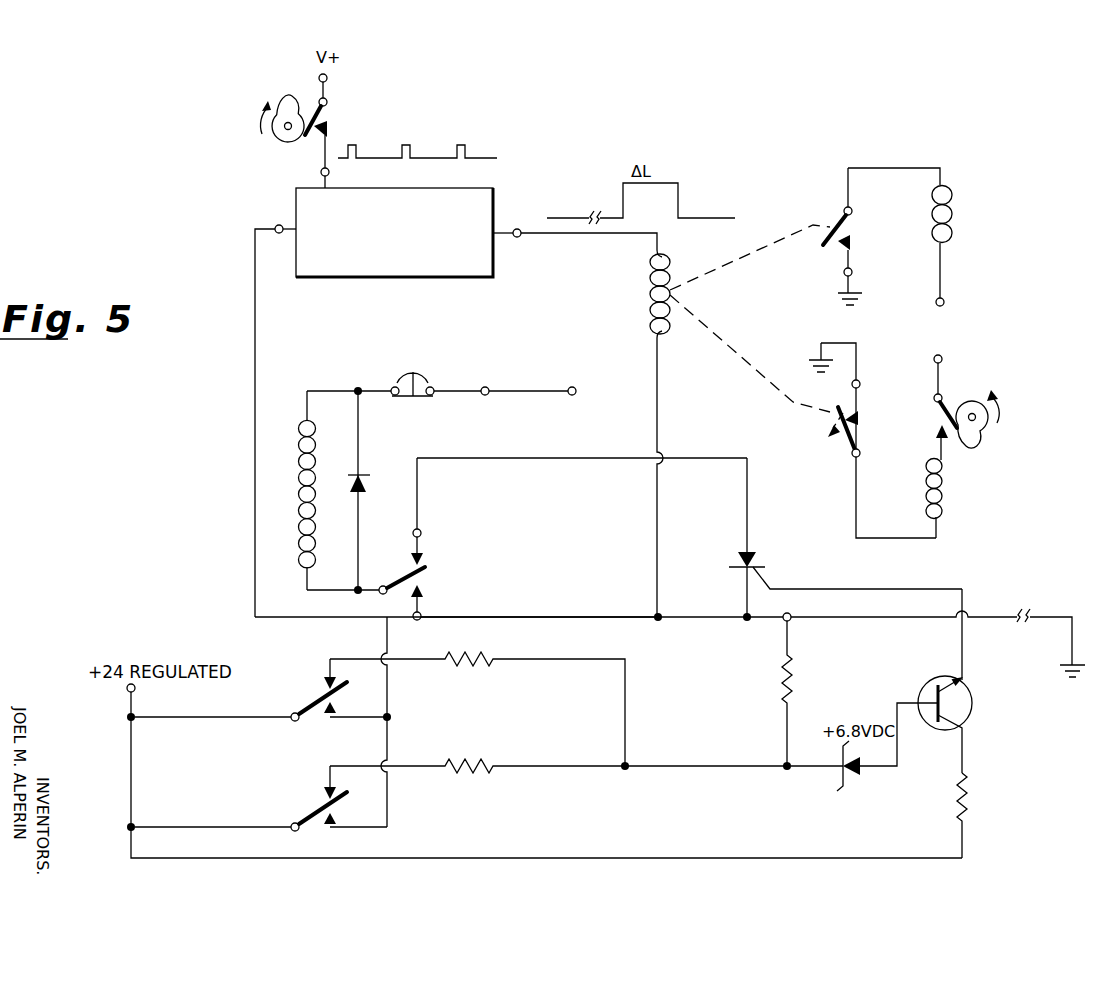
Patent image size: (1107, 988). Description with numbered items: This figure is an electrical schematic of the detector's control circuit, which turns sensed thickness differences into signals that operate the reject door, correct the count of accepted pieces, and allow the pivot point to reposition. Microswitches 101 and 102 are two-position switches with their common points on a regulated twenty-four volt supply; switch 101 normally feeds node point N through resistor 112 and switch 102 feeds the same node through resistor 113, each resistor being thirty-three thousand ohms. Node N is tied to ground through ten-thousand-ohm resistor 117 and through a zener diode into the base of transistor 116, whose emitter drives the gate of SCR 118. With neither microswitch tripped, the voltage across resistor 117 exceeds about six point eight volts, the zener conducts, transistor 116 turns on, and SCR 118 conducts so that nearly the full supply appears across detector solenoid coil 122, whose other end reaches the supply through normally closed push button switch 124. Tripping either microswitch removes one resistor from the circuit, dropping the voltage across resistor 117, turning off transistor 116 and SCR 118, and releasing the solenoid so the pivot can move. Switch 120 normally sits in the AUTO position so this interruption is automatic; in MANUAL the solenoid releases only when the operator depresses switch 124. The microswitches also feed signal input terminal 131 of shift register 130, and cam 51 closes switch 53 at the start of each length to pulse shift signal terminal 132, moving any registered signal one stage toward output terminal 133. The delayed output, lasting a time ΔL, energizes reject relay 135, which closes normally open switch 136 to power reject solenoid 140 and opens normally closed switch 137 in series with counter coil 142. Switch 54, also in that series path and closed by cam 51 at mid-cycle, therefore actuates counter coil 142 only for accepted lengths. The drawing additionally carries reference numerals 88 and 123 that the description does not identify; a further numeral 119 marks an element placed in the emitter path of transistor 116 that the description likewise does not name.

The cam 51 is at (282, 136).
The switch 53 is at (329, 109).
The switch 54 is at (936, 412).
The conductor 88 is at (373, 390).
The microswitch 101 is at (315, 692).
The microswitch 102 is at (315, 803).
The resistor 112 is at (485, 657).
The resistor 113 is at (460, 765).
The transistor 116 is at (963, 705).
The resistor 117 is at (797, 669).
The SCR 118 is at (755, 555).
The resistor 119 is at (968, 808).
The switch 120 is at (450, 577).
The detector solenoid coil 122 is at (297, 506).
The diode 123 is at (364, 477).
The normally closed push button switch 124 is at (422, 380).
The shift register 130 is at (485, 205).
The signal input terminal 131 is at (276, 226).
The shift signal terminal 132 is at (330, 172).
The output terminal 133 is at (519, 238).
The reject relay 135 is at (655, 310).
The normally open switch 136 is at (852, 216).
The normally closed switch 137 is at (867, 444).
The reject solenoid 140 is at (952, 243).
The counter coil 142 is at (933, 510).